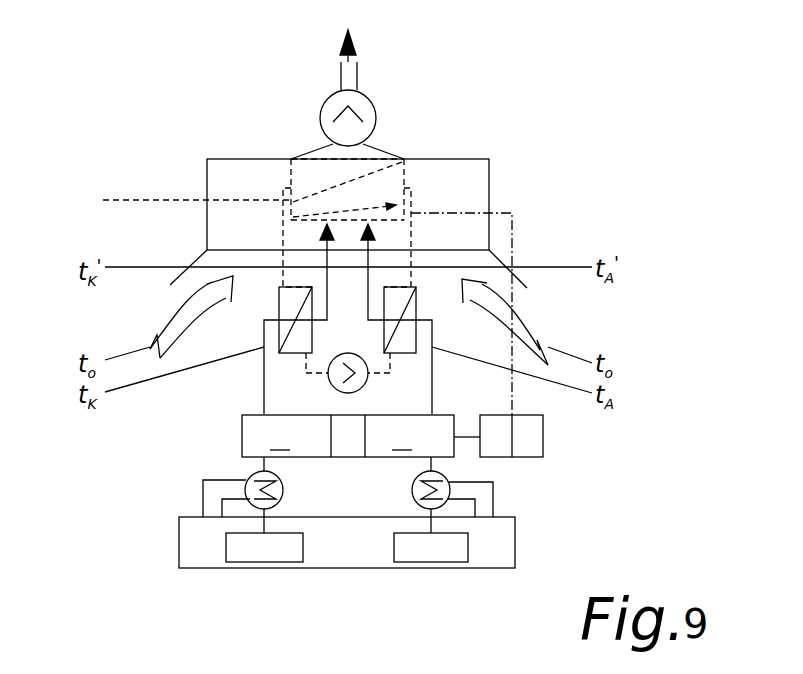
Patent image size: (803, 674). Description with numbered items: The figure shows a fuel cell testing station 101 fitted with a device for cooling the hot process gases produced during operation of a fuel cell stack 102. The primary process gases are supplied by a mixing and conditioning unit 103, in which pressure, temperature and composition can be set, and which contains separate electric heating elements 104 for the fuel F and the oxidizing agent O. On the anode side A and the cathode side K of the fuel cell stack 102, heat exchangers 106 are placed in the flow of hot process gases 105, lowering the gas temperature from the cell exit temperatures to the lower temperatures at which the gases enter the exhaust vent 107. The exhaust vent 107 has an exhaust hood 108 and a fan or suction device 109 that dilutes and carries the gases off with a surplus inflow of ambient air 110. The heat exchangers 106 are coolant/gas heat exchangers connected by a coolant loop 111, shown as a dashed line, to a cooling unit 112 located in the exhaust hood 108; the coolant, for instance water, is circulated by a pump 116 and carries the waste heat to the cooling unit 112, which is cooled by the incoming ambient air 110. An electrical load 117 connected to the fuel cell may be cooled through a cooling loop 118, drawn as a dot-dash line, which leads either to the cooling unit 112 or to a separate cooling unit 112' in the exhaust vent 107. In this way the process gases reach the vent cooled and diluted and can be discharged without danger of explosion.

The fuel cell testing station 101 is at (160, 253).
The fuel cell stack 102 is at (242, 430).
The mixing and conditioning unit 103 is at (515, 537).
The electric heating elements 104 is at (246, 502).
The flow of hot process gases 105 is at (264, 365).
The heat exchangers 106 is at (279, 300).
The exhaust vent 107 is at (418, 138).
The exhaust hood 108 is at (489, 171).
The fan or suction device 109 is at (362, 97).
The ambient air 110 is at (168, 322).
The coolant loop 111 is at (174, 202).
The cooling unit 112 is at (458, 165).
The separate cooling unit 112' is at (461, 209).
The pump 116 is at (330, 381).
The electrical load 117 is at (543, 438).
The cooling loop 118 is at (512, 233).